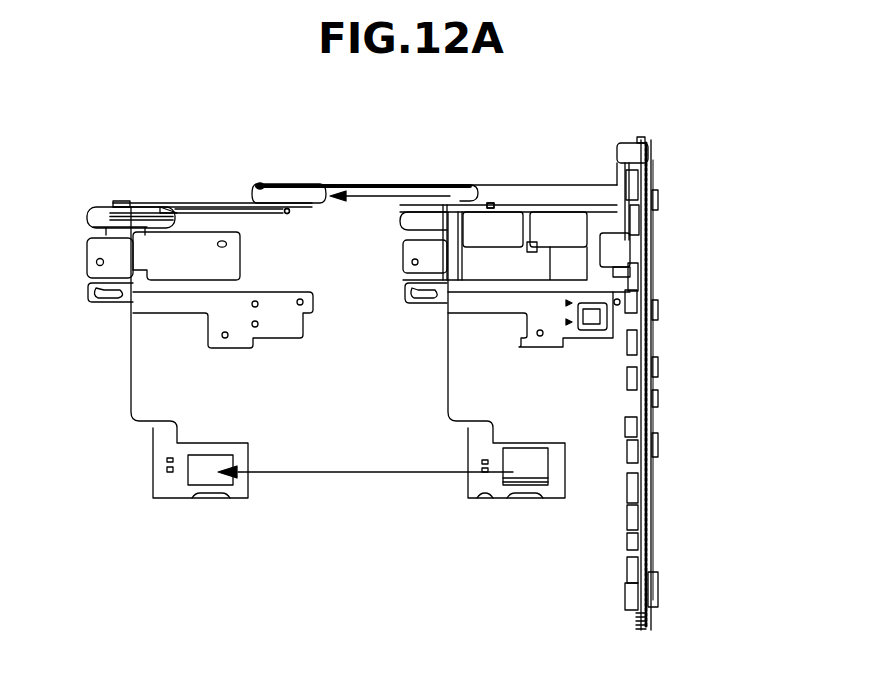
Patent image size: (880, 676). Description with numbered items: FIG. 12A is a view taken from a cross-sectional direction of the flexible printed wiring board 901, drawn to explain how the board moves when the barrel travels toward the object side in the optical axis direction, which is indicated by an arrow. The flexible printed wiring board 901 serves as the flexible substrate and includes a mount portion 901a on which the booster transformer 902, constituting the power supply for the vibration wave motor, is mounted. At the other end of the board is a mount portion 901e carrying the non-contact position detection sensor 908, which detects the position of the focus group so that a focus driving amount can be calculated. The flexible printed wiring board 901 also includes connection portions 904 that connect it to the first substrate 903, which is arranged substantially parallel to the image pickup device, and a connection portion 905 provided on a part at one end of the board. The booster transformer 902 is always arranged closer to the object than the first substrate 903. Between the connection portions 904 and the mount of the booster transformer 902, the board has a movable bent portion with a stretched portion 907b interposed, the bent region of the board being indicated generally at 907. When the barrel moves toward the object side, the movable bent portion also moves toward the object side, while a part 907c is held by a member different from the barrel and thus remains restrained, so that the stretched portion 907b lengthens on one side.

The flexible printed wiring board 901 is at (497, 180).
The mount portion 901a is at (493, 207).
The mount portion 901e is at (468, 498).
The booster transformer 902 is at (507, 217).
The first substrate 903 is at (648, 628).
The connection portions 904 is at (660, 200).
The connection portion 905 is at (594, 319).
The slide rod 907 is at (472, 185).
The stretched portion 907b is at (148, 206).
The part 907c is at (261, 183).
The non-contact position detection sensor 908 is at (535, 487).